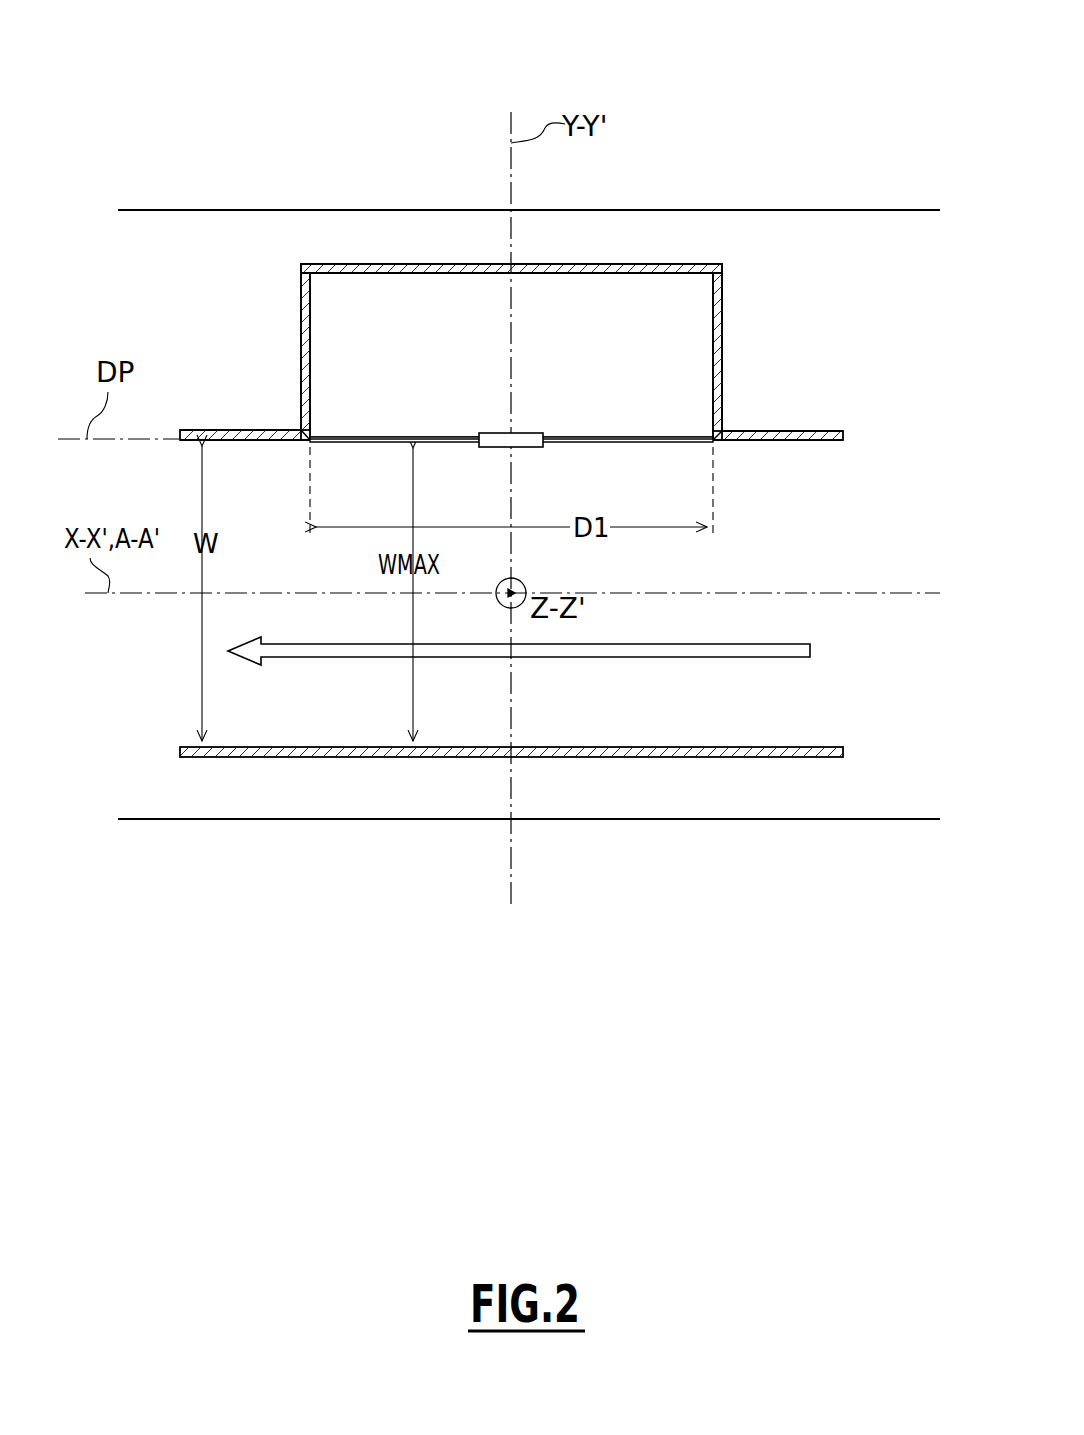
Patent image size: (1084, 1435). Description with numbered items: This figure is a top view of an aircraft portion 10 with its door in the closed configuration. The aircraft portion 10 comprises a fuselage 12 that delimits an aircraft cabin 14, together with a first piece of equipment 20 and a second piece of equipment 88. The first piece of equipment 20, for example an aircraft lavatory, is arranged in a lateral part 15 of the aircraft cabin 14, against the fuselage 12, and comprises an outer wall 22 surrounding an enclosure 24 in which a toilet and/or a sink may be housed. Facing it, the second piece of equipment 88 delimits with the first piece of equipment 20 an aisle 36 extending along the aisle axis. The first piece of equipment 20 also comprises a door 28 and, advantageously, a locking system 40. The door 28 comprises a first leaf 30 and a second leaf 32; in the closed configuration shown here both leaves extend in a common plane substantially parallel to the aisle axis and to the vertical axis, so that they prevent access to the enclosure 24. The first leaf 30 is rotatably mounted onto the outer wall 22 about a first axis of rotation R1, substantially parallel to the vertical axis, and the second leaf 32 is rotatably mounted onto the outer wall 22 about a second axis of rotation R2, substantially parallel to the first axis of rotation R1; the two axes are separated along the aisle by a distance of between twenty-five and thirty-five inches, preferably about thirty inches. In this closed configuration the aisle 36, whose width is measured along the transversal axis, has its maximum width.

The aircraft portion 10 is at (738, 62).
The fuselage 12 is at (383, 210).
The aircraft cabin 14 is at (886, 244).
The lateral part 15 is at (808, 292).
The first piece of equipment 20 is at (656, 256).
The outer wall 22 is at (722, 380).
The enclosure 24 is at (666, 328).
The door 28 is at (657, 446).
The first leaf 30 is at (352, 442).
The second leaf 32 is at (618, 442).
The aisle 36 is at (322, 698).
The locking system 40 is at (530, 425).
The second piece of equipment 88 is at (690, 742).
The first axis of rotation R1 is at (303, 444).
The second axis of rotation R2 is at (718, 446).